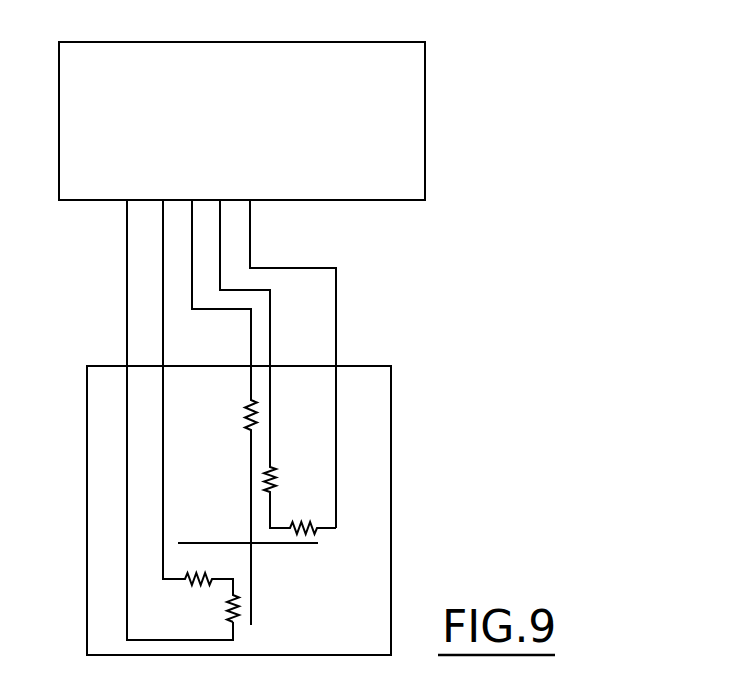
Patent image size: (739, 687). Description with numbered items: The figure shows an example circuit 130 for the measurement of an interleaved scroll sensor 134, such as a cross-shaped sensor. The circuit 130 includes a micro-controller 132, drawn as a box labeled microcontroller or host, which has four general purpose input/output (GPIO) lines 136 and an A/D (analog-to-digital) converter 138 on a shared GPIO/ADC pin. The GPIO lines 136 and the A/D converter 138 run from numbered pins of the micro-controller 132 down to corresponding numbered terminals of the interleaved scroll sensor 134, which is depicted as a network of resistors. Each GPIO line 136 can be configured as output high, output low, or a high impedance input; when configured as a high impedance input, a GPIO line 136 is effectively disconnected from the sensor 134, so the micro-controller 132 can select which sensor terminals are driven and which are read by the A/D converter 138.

The circuit 130 is at (512, 58).
The micro-controller 132 is at (425, 110).
The interleaved scroll sensor 134 is at (391, 435).
The general purpose input/output (GPIO) lines 136 is at (163, 258).
The A/D (analog-to-digital) converter 138 is at (192, 242).